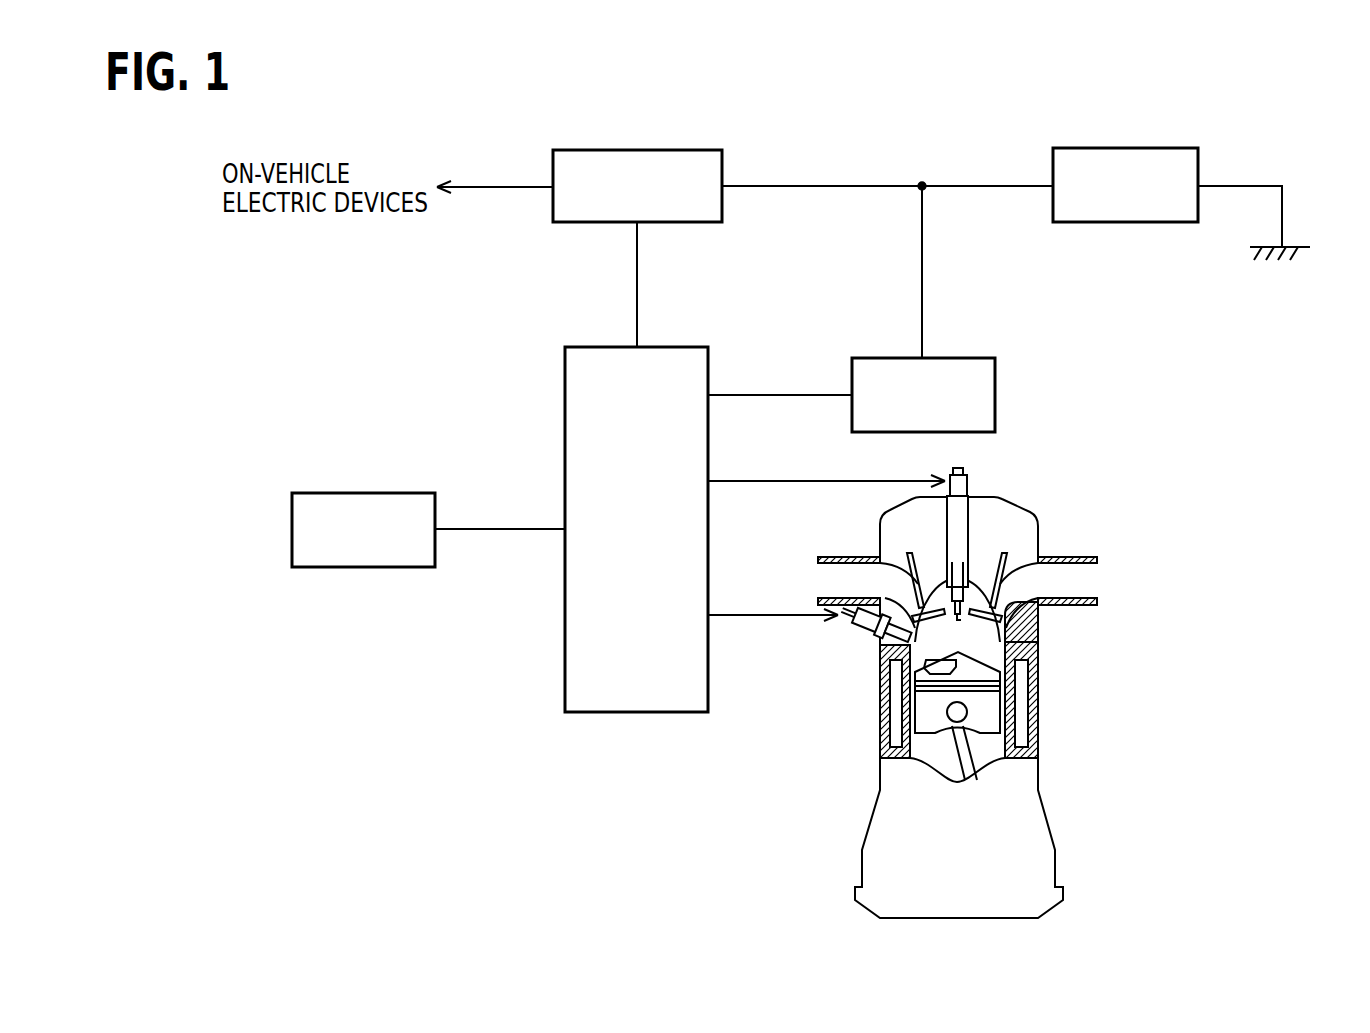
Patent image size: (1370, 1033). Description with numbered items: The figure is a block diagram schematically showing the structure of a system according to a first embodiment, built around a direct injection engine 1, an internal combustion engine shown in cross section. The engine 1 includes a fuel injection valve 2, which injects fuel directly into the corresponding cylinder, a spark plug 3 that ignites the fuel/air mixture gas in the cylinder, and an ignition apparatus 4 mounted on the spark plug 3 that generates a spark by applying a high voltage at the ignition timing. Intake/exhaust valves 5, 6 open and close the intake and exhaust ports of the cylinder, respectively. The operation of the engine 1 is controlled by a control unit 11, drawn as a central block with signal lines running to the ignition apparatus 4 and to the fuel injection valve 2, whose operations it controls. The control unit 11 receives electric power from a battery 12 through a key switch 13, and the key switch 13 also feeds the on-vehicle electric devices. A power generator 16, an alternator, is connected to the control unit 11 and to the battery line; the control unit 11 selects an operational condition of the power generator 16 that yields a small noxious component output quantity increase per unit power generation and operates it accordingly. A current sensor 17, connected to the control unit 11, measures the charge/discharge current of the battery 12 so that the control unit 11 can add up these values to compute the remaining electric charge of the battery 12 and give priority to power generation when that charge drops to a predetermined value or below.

The direct injection engine 1 is at (970, 675).
The fuel injection valve 2 is at (868, 633).
The spark plug 3 is at (968, 600).
The ignition apparatus 4 is at (967, 478).
The intake valve 5 is at (895, 664).
The exhaust valve 6 is at (1038, 638).
The control unit 11 is at (684, 347).
The battery 12 is at (1163, 148).
The key switch 13 is at (684, 150).
The power generator 16 is at (995, 393).
The current sensor 17 is at (400, 493).